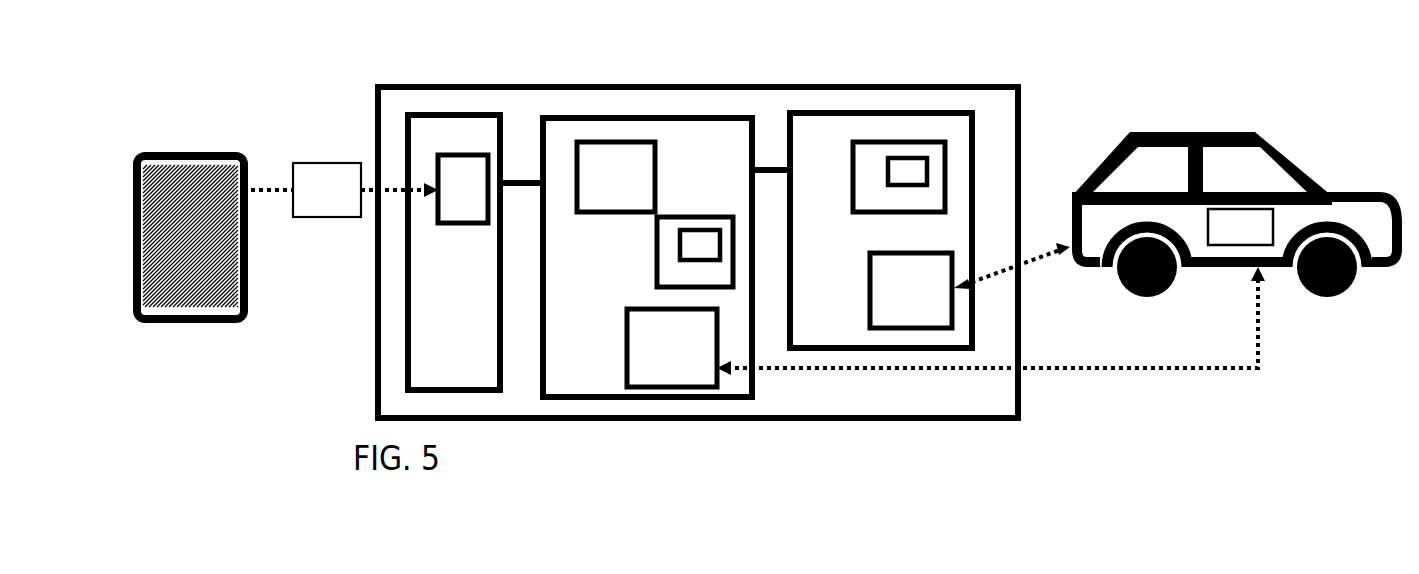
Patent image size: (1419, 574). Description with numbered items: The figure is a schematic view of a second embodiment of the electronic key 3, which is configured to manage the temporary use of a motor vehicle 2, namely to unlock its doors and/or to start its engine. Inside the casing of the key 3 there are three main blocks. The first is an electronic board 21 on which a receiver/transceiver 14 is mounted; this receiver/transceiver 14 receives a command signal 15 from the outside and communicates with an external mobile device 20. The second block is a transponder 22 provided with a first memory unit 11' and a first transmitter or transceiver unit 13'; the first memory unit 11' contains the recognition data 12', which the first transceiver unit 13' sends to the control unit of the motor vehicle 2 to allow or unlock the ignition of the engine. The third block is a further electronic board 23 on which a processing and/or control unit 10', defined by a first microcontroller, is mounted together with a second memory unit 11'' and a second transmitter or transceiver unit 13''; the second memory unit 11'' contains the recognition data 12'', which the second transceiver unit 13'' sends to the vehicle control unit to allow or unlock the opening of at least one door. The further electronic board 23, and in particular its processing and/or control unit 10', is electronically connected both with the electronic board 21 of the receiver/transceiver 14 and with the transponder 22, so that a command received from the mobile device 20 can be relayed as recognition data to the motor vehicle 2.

The motor vehicle 2 is at (1262, 122).
The electronic key 3 is at (366, 343).
The processing and/or control unit 10' is at (617, 119).
The first memory unit 11' is at (992, 134).
The second memory unit 11'' is at (719, 163).
The recognition data 12' is at (955, 107).
The recognition data 12'' is at (761, 152).
The first transmitter or transceiver unit 13' is at (941, 361).
The second transmitter or transceiver unit 13'' is at (713, 389).
The receiver/transceiver 14 is at (438, 155).
The command signal 15 is at (344, 190).
The external mobile device 20 is at (170, 150).
The electronic board 21 is at (455, 113).
The transponder 22 is at (845, 118).
The further electronic board 23 is at (648, 117).